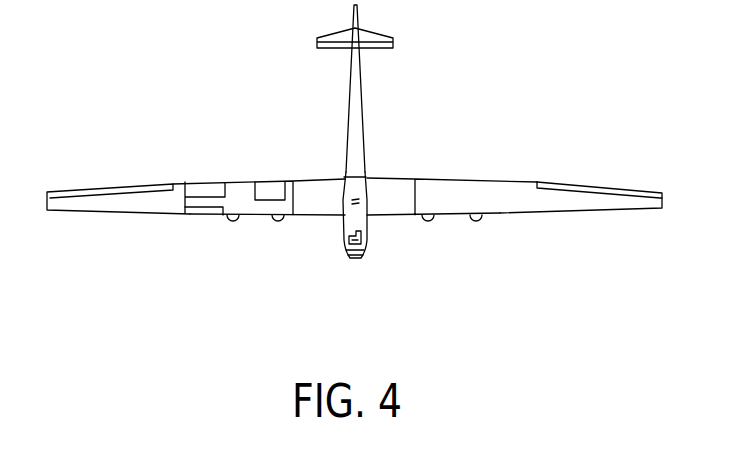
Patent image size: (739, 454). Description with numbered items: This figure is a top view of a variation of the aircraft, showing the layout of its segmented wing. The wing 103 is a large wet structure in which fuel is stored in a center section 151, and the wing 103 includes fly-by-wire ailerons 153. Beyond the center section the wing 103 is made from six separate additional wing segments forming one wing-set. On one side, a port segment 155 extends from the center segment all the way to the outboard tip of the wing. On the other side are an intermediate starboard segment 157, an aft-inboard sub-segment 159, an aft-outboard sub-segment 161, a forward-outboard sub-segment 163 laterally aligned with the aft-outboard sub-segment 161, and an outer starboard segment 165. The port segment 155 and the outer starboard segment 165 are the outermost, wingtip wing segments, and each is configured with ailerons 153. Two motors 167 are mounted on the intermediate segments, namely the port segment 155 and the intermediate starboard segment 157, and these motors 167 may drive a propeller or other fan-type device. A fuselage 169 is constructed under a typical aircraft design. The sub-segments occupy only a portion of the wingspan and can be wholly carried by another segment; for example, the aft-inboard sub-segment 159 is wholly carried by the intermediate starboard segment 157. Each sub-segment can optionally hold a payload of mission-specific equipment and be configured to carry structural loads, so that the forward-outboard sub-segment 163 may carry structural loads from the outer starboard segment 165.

The wing 103 is at (533, 182).
The center section 151 is at (318, 193).
The ailerons 153 is at (577, 185).
The port segment 155 is at (488, 187).
The intermediate starboard segment 157 is at (243, 210).
The aft-inboard sub-segment 159 is at (272, 193).
The aft-outboard sub-segment 161 is at (190, 200).
The forward-outboard sub-segment 163 is at (205, 213).
The outer starboard segment 165 is at (122, 207).
The motors 167 is at (477, 220).
The fuselage 169 is at (360, 148).